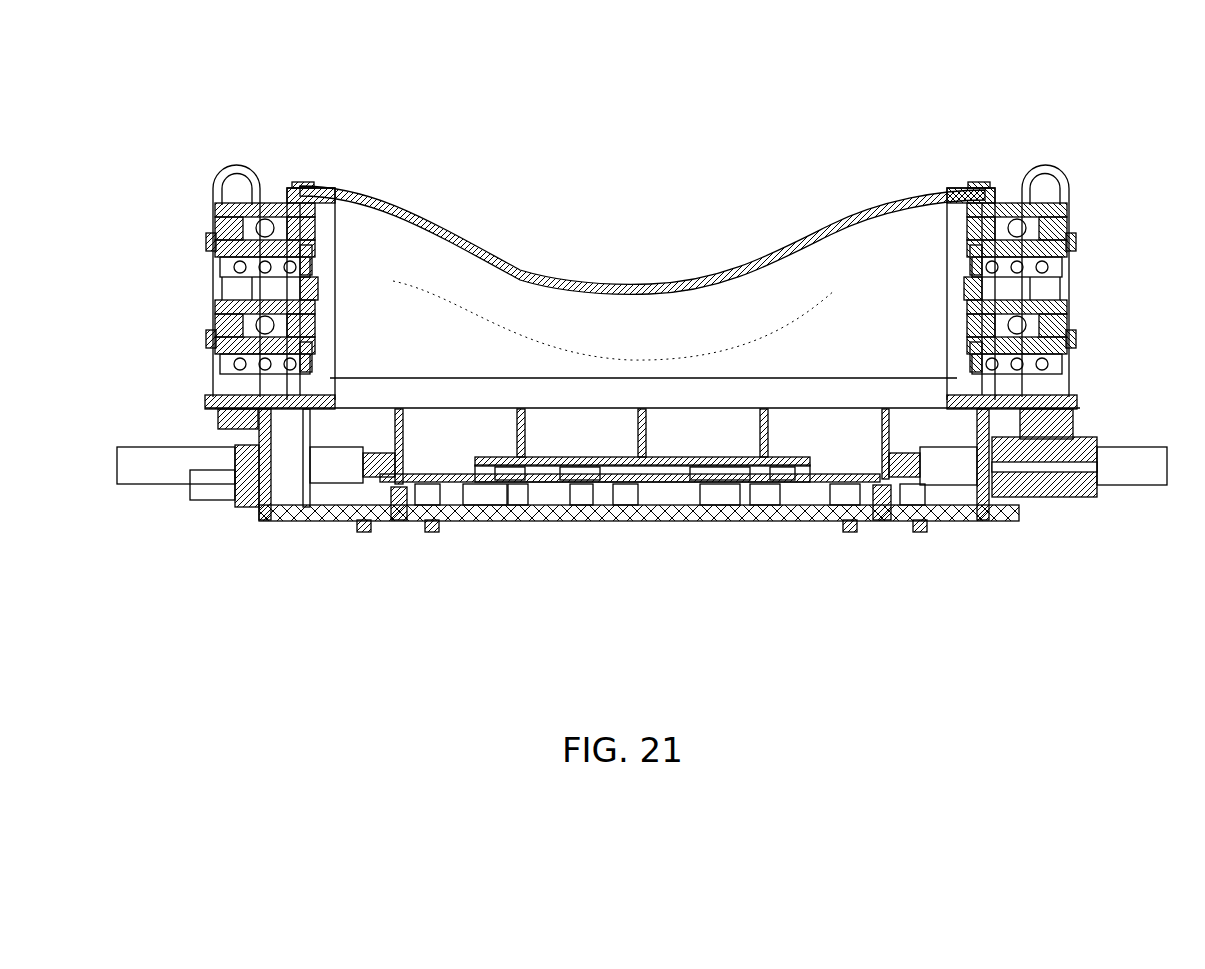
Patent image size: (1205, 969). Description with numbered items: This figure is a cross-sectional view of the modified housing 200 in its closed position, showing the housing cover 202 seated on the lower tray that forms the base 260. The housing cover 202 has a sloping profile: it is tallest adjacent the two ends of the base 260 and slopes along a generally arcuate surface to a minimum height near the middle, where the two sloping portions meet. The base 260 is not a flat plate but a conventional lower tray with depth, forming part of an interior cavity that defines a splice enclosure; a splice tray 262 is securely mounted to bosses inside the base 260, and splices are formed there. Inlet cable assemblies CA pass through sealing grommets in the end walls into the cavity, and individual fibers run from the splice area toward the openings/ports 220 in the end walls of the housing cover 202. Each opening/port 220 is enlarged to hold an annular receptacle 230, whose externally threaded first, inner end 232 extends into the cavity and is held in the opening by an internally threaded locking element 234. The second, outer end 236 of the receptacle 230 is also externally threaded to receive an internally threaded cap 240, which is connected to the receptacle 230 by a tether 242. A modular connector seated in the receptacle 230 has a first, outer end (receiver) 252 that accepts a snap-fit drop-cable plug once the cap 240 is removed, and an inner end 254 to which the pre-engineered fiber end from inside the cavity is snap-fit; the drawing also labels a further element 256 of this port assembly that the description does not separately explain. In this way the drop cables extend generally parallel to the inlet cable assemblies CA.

The housing 200 is at (758, 127).
The housing cover 202 is at (665, 285).
The opening/port 220 is at (300, 217).
The annular receptacle 230 is at (270, 210).
The first, inner end 232 is at (308, 268).
The internally threaded locking element 234 is at (303, 190).
The second, outer end 236 is at (1066, 203).
The internally threaded cap 240 is at (235, 207).
The tether 242 is at (228, 168).
The first, outer end (receiver) 252 is at (298, 232).
The inner end 254 is at (312, 250).
The side block 256 is at (230, 256).
The base (lower tray) 260 is at (877, 523).
The splice tray 262 is at (608, 458).
The inlet cable assembly CA is at (153, 477).